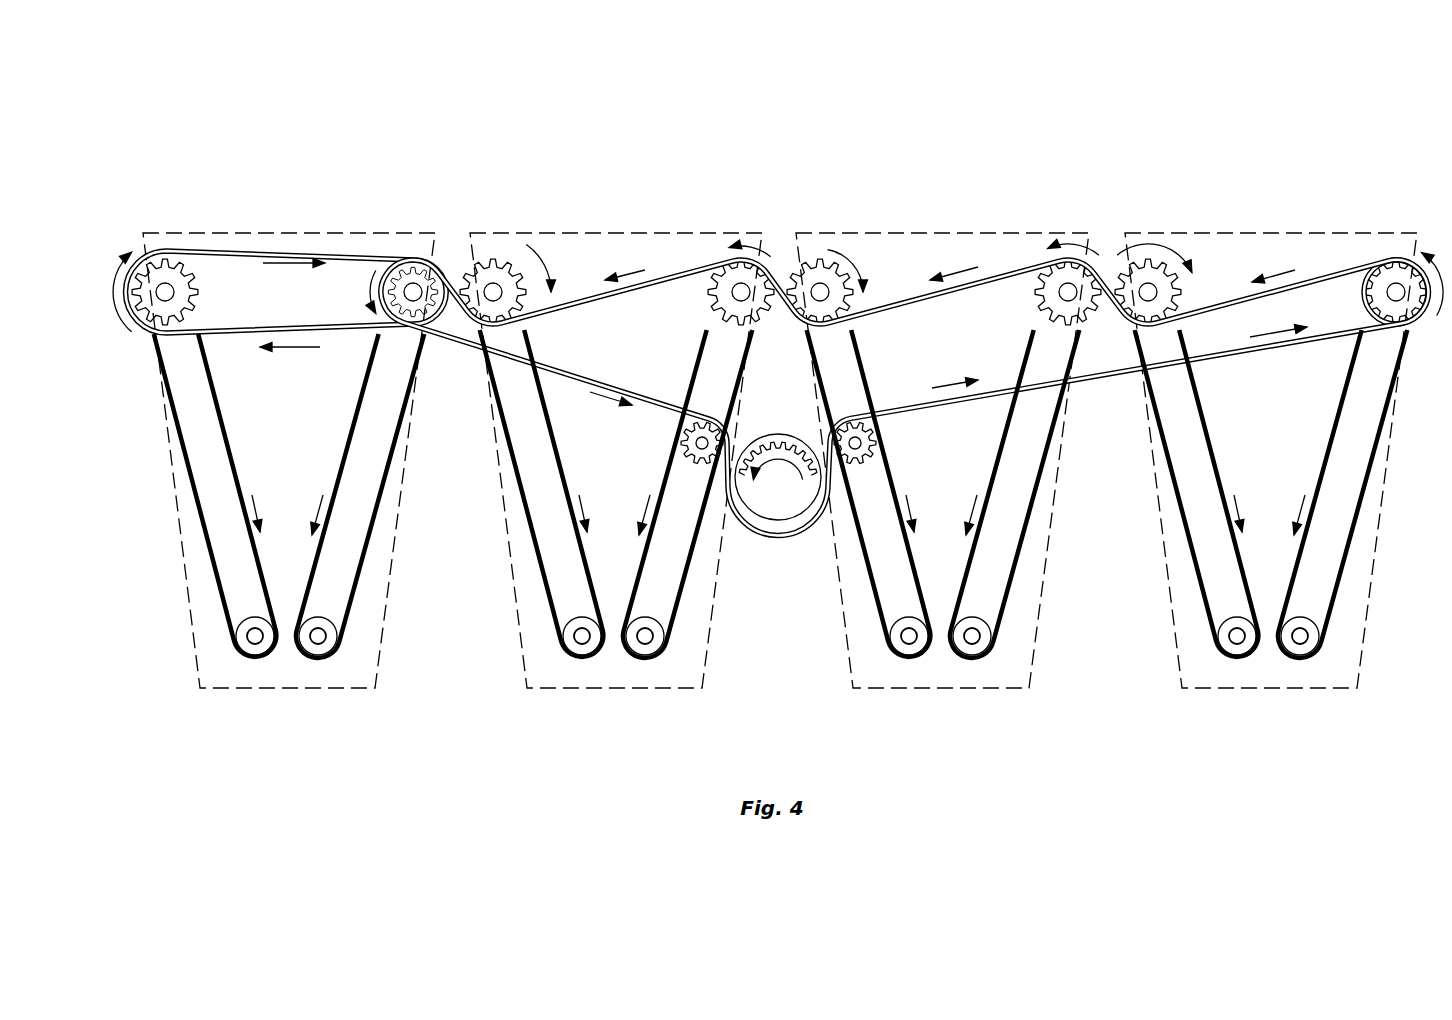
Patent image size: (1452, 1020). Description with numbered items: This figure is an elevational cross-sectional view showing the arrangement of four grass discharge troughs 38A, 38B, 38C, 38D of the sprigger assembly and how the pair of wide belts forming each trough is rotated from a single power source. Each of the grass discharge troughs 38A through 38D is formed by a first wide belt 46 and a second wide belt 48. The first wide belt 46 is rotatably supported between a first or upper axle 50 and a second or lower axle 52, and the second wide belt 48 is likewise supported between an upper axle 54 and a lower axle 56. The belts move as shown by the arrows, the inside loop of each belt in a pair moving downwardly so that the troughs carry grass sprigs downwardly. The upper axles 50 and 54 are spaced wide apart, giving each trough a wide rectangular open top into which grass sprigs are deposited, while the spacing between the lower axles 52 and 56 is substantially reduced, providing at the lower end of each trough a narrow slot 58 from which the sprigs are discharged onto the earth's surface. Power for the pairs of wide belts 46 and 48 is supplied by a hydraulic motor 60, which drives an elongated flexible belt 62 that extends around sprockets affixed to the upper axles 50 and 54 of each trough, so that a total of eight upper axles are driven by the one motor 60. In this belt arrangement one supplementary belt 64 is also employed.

The grass discharge trough 38A is at (318, 222).
The grass discharge trough 38B is at (647, 222).
The grass discharge trough 38C is at (975, 222).
The grass discharge trough 38D is at (1302, 222).
The first wide belt 46 is at (365, 556).
The second wide belt 48 is at (210, 557).
The first or upper axle 50 is at (410, 288).
The second or lower axle 52 is at (320, 641).
The upper axle 54 is at (168, 288).
The lower axle 56 is at (253, 641).
The narrow slot 58 is at (286, 642).
The hydraulic motor 60 is at (786, 432).
The elongated flexible belt 62 is at (586, 296).
The supplementary belt 64 is at (262, 249).